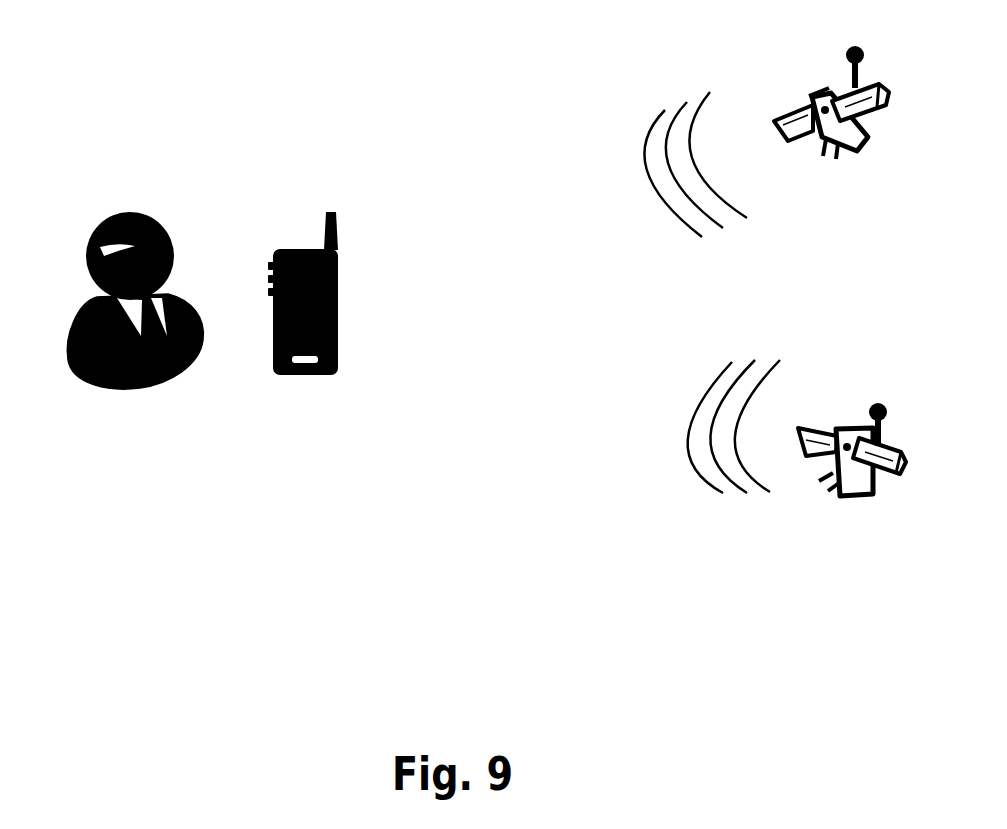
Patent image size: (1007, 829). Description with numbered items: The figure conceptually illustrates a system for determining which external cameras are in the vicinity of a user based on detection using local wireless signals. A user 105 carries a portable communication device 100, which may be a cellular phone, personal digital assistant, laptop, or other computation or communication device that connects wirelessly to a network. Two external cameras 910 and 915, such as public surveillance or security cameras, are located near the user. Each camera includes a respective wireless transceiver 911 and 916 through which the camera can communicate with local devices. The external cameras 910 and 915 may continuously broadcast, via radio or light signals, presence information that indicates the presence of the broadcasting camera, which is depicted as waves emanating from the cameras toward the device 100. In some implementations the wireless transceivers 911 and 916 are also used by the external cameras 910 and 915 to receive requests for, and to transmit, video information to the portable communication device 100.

The portable communication device 100 is at (280, 256).
The user 105 is at (93, 229).
The external camera 910 is at (893, 99).
The wireless transceiver 911 is at (866, 55).
The external camera 915 is at (913, 458).
The wireless transceiver 916 is at (890, 412).